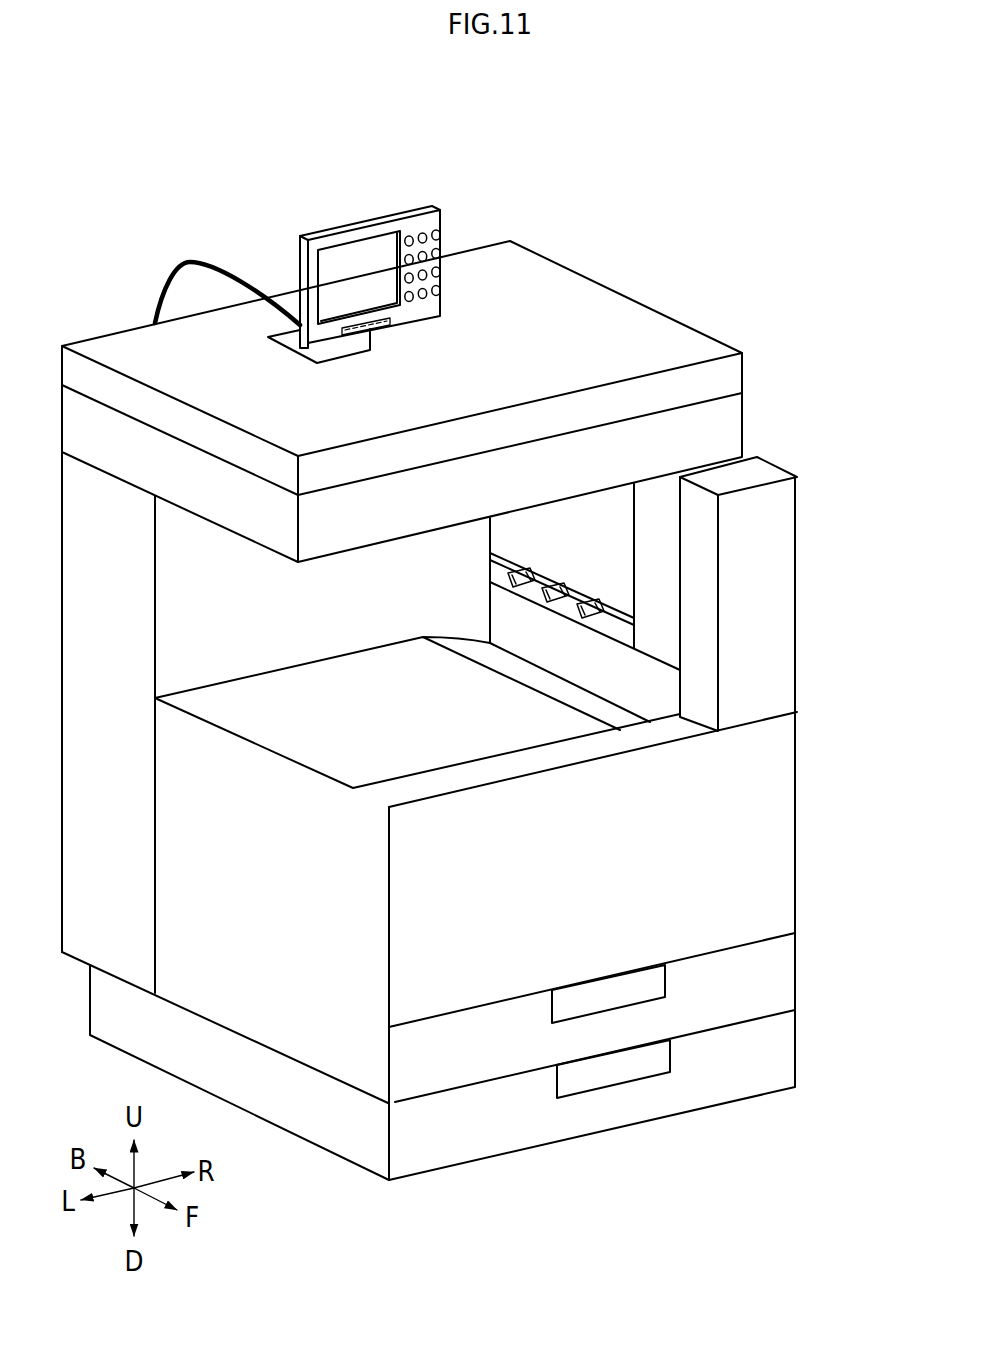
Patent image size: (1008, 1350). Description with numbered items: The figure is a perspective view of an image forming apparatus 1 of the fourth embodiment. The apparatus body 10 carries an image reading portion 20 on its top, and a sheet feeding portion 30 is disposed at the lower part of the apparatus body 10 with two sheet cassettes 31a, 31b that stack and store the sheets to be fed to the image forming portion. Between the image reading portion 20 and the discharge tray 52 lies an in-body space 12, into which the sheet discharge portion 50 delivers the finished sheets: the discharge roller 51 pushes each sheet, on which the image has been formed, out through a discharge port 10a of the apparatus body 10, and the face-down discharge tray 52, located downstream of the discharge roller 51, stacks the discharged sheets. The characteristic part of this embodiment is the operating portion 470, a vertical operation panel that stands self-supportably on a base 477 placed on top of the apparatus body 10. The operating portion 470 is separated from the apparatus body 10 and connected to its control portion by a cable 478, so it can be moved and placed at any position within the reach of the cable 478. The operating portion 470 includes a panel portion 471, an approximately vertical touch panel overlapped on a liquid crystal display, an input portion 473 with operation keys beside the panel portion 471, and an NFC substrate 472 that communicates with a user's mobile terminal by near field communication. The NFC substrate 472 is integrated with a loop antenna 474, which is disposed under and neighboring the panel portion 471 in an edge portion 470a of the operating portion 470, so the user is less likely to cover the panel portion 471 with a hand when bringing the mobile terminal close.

The image forming apparatus 1 is at (482, 653).
The apparatus body 10 is at (482, 816).
The discharge port 10a is at (515, 598).
The in-body space 12 is at (178, 647).
The image reading portion 20 is at (707, 308).
The sheet feeding portion 30 is at (645, 991).
The sheet cassette 31a is at (785, 977).
The sheet cassette 31b is at (785, 1062).
The sheet discharge portion 50 is at (417, 701).
The discharge roller 51 is at (548, 586).
The discharge tray 52 is at (390, 670).
The operating portion 470 is at (427, 284).
The edge portion 470a is at (423, 323).
The panel portion 471 is at (358, 253).
The NFC substrate 472 is at (384, 367).
The input portion 473 is at (441, 277).
The antenna 474 is at (384, 367).
The base 477 is at (287, 333).
The cable 478 is at (208, 262).